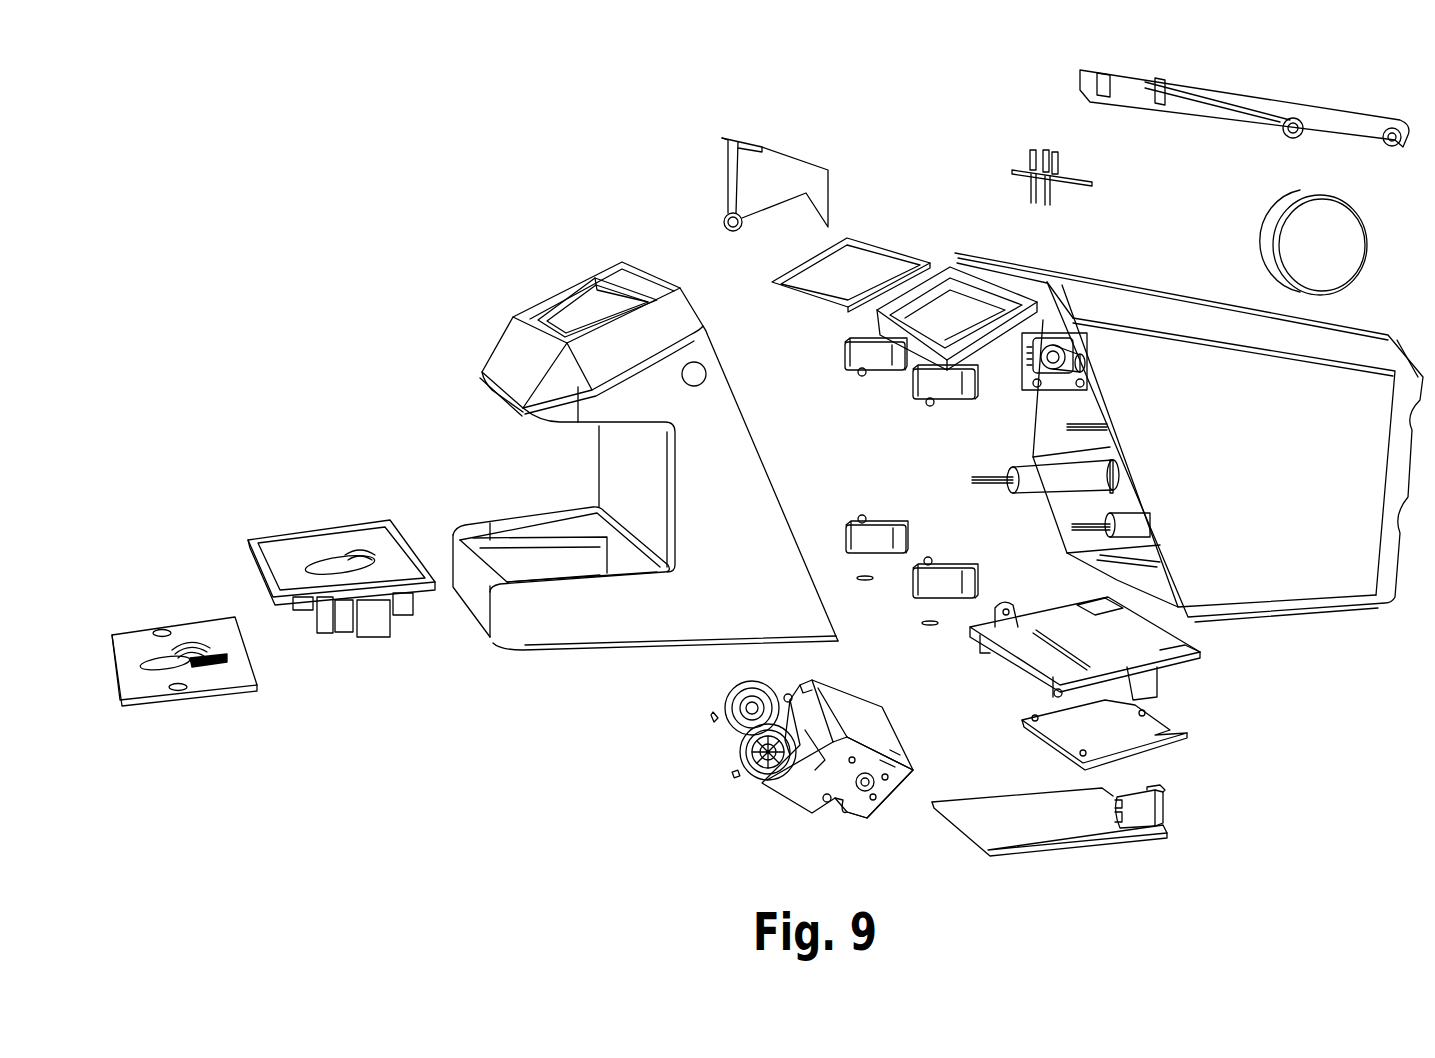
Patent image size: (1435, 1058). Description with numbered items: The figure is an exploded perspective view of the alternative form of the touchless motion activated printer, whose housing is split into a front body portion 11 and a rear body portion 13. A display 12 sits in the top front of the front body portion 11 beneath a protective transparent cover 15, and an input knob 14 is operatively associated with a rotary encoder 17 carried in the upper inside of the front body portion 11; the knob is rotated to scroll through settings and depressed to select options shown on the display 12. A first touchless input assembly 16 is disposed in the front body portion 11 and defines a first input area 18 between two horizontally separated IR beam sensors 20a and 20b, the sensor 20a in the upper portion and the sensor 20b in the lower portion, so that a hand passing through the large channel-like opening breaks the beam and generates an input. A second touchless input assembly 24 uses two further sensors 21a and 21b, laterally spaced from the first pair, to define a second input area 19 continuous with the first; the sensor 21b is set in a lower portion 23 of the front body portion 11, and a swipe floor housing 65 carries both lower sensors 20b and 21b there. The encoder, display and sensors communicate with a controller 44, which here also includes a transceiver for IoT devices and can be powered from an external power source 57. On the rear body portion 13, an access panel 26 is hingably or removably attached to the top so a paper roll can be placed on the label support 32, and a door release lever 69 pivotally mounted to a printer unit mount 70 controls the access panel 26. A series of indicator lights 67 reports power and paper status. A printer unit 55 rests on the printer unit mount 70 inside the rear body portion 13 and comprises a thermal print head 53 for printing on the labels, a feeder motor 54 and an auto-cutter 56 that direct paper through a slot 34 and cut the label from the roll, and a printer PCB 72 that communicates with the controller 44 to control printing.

The front body portion 11 is at (510, 353).
The display 12 is at (940, 280).
The rear body portion 13 is at (1347, 582).
The input knob 14 is at (1317, 227).
The transparent cover 15 is at (818, 273).
The first touchless input assembly 16 is at (858, 413).
The rotary encoder 17 is at (1047, 283).
The first input area 18 is at (518, 464).
The second input area 19 is at (585, 562).
The sensor 20a is at (855, 353).
The sensor 20b is at (855, 550).
The sensor 21a is at (948, 388).
The sensor 21b is at (953, 577).
The lower portion 23 is at (485, 600).
The second touchless input assembly 24 is at (928, 475).
The access panel 26 is at (1273, 102).
The label support 32 is at (1037, 410).
The slot 34 is at (1113, 278).
The controller 44 is at (1045, 835).
The thermal print head 53 is at (882, 777).
The feeder motor 54 is at (772, 787).
The printer unit 55 is at (720, 736).
The auto-cutter 56 is at (843, 720).
The external power source 57 is at (1143, 800).
The swipe floor housing 65 is at (343, 533).
The indicator lights 67 is at (1033, 150).
The door release lever 69 is at (743, 183).
The printer unit mount 70 is at (1165, 650).
The printer PCB 72 is at (1187, 737).